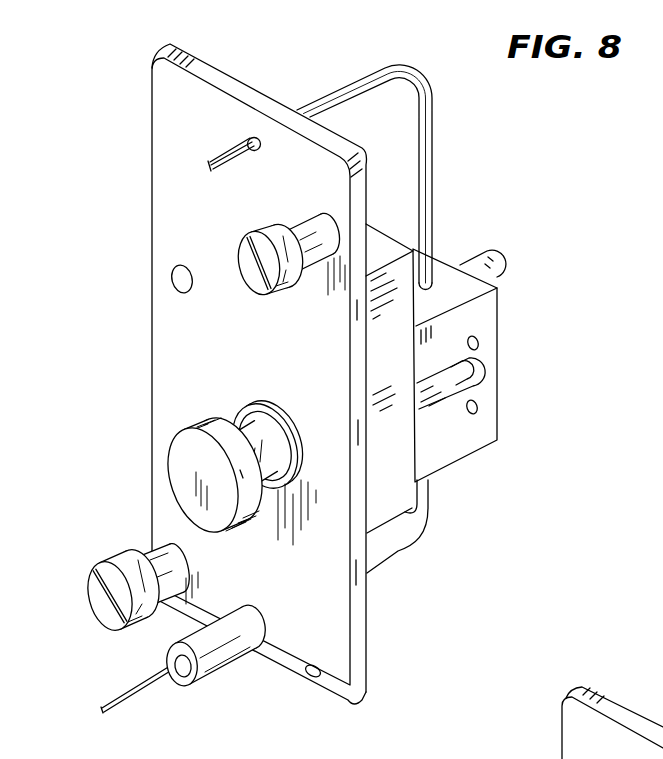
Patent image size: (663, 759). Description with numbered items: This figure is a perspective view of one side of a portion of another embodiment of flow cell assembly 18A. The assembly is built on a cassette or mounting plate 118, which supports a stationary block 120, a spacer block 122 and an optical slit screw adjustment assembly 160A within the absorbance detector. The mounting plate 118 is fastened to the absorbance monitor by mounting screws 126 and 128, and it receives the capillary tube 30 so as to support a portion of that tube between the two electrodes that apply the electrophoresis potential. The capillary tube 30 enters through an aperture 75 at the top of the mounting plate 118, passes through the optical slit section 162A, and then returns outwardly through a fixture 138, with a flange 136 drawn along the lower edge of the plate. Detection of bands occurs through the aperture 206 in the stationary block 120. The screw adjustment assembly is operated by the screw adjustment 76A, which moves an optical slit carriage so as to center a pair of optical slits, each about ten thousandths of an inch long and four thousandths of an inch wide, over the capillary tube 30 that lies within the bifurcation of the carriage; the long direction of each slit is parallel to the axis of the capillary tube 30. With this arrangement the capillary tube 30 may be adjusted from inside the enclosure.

The flow cell assembly 18A is at (338, 52).
The capillary tube 30 is at (230, 161).
The aperture 75 is at (248, 133).
The mounting plate 118 is at (138, 276).
The stationary block 120 is at (440, 258).
The spacer block 122 is at (384, 509).
The mounting screw 126 is at (96, 606).
The mounting screw 128 is at (250, 235).
The flange 136 is at (339, 693).
The fixture 138 is at (233, 664).
The bezel ring 160A is at (304, 372).
The optical slit section 162A is at (505, 350).
The aperture 206 is at (479, 366).
The screw adjustment 76A is at (210, 412).